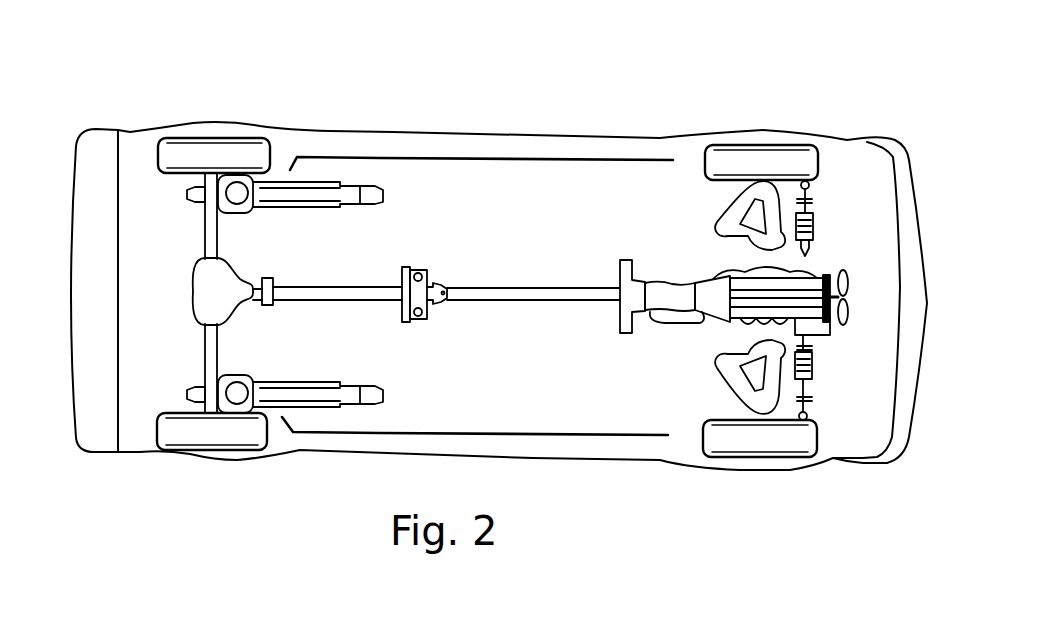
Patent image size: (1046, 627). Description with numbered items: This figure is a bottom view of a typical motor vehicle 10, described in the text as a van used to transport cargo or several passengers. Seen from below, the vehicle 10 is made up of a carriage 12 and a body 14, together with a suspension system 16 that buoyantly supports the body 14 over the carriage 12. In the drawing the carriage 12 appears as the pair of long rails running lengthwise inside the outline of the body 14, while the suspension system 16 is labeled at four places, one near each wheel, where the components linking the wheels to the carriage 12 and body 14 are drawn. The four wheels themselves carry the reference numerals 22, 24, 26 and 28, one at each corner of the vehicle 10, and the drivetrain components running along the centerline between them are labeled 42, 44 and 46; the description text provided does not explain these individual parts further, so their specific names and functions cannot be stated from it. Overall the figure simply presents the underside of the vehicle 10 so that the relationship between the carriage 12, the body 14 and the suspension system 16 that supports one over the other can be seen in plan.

The motor vehicle 10 is at (493, 108).
The carriage 12 is at (549, 181).
The body 14 is at (330, 132).
The suspension system 16 is at (268, 208).
The rear wheel 22 is at (767, 457).
The rear wheel 24 is at (753, 143).
The front wheel 26 is at (223, 452).
The front wheel 28 is at (188, 138).
The engine / motor 42 is at (737, 270).
The transmission 44 is at (718, 315).
The drive shaft 46 is at (345, 300).